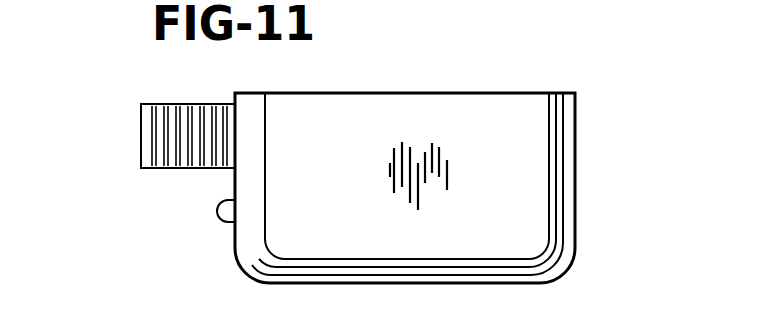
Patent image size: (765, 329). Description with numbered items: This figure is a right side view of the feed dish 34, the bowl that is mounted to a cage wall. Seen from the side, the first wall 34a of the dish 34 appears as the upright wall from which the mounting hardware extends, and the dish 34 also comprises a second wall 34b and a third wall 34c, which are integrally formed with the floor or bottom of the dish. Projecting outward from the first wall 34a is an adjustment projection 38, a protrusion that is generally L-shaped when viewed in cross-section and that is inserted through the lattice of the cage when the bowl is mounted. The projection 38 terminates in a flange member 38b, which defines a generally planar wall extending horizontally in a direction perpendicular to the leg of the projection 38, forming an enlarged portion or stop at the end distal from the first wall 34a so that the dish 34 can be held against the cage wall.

The feed dish 34 is at (398, 159).
The first wall 34a is at (235, 245).
The second wall 34b is at (405, 98).
The third wall 34c is at (578, 162).
The adjustment projection 38 is at (127, 112).
The flange member 38b is at (141, 143).